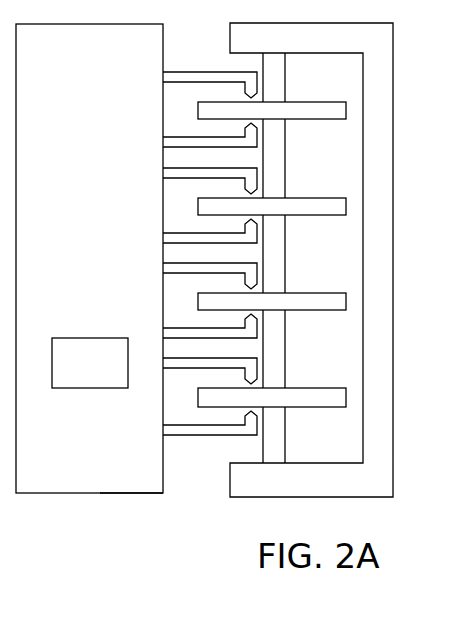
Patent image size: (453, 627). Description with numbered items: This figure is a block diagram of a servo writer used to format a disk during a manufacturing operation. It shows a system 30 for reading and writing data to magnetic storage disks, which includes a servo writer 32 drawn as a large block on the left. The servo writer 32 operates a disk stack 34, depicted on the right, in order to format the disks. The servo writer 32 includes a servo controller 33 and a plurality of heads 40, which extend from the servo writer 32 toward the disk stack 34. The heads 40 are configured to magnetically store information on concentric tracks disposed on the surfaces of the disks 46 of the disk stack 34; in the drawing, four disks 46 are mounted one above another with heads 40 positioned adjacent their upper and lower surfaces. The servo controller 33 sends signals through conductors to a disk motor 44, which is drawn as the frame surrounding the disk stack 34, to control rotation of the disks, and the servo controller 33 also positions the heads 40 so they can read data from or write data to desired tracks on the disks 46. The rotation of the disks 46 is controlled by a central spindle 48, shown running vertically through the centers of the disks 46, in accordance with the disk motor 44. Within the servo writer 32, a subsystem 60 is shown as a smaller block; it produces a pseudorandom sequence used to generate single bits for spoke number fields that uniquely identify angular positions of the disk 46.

The system 30 is at (112, 527).
The servo writer 32 is at (45, 494).
The servo controller 33 is at (127, 493).
The disk stack 34 is at (228, 450).
The heads 40 is at (256, 90).
The disk motor 44 is at (393, 98).
The disks 46 is at (329, 102).
The central spindle 48 is at (286, 161).
The subsystem 60 is at (61, 388).